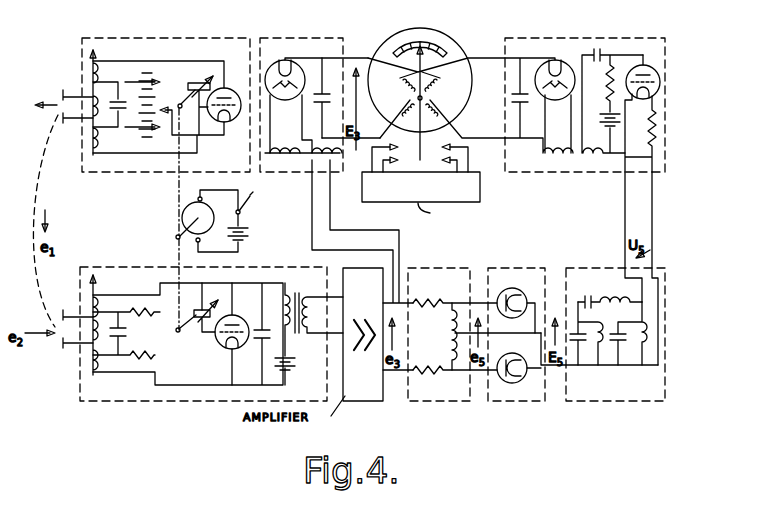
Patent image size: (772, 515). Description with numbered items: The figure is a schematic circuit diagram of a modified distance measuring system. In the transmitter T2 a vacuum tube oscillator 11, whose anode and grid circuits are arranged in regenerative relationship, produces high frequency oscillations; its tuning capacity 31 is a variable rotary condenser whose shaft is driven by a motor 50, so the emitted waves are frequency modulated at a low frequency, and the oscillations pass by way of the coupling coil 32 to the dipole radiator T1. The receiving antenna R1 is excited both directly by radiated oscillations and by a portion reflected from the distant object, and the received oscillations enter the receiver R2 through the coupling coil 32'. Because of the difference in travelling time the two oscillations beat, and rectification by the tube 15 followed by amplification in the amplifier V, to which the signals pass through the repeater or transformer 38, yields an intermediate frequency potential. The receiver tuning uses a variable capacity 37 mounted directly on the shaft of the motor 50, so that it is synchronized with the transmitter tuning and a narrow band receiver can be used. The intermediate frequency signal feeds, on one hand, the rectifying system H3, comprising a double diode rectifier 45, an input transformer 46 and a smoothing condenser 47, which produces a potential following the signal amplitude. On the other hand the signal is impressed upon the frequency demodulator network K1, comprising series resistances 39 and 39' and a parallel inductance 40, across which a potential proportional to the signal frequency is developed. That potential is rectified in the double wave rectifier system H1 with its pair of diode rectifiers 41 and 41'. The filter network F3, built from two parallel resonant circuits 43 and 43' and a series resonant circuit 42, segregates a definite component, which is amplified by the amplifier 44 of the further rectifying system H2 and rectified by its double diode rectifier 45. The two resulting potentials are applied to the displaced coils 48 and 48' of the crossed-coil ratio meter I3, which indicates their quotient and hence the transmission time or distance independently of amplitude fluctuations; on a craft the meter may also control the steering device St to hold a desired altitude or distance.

The vacuum tube oscillator 11 is at (227, 116).
The rectifying tube 15 is at (234, 334).
The tuning capacity 31 is at (192, 85).
The coupling coil 32 is at (77, 102).
The coupling coil 32' is at (77, 328).
The variable tuning condenser 37 is at (220, 308).
The repeater or transformer 38 is at (294, 342).
The series resistance 39 is at (455, 315).
The series resistance 39' is at (454, 361).
The parallel inductance 40 is at (482, 336).
The diode rectifier 41 is at (516, 310).
The diode rectifier 41' is at (518, 363).
The series resonant circuit 42 is at (614, 292).
The parallel resonant circuit 43 is at (586, 347).
The parallel resonant circuit 43' is at (628, 347).
The amplifier 44 is at (654, 70).
The double diode rectifier 45 is at (560, 101).
The input transformer 46 is at (300, 163).
The smoothing condenser 47 is at (325, 106).
The coil of crossed-coil ratio meter 48 is at (396, 97).
The coil of crossed-coil ratio meter 48' is at (444, 97).
The motor 50 is at (214, 221).
The dipole radiator T1 is at (61, 98).
The transmitter T2 is at (165, 36).
The receiving antenna R1 is at (58, 348).
The receiver R2 is at (200, 405).
The amplifier V is at (358, 404).
The filter or frequency demodulator network K1 is at (440, 405).
The double wave rectifier system H1 is at (516, 405).
The rectifying system H2 is at (570, 36).
The rectifying system H3 is at (290, 36).
The crossed-coil ratio meter I3 is at (420, 83).
The filter or network F3 is at (612, 405).
The steering device St is at (456, 183).